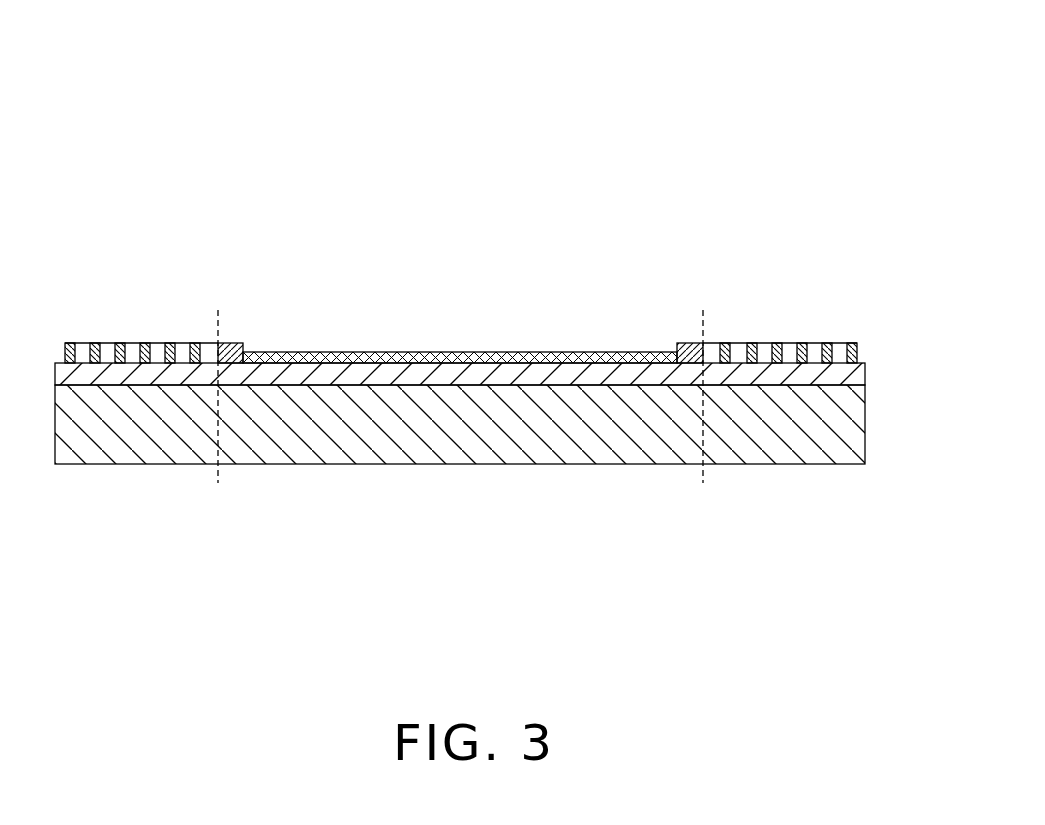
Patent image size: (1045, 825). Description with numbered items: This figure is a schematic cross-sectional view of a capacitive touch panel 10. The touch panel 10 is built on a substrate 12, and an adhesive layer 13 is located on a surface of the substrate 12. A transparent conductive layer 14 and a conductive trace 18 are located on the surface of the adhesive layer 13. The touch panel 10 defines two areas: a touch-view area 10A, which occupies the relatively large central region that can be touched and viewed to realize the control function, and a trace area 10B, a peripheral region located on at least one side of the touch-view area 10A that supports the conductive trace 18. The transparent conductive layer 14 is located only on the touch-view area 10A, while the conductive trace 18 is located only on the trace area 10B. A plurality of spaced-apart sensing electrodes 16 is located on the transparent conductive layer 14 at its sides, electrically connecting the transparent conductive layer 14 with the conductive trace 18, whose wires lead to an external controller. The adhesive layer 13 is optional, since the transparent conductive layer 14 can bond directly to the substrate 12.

The touch panel 10 is at (545, 70).
The touch-view area 10A is at (673, 336).
The trace area 10B is at (862, 336).
The substrate 12 is at (857, 421).
The adhesive layer 13 is at (862, 372).
The transparent conductive layer 14 is at (585, 361).
The sensing electrodes 16 is at (235, 342).
The conductive trace 18 is at (118, 343).